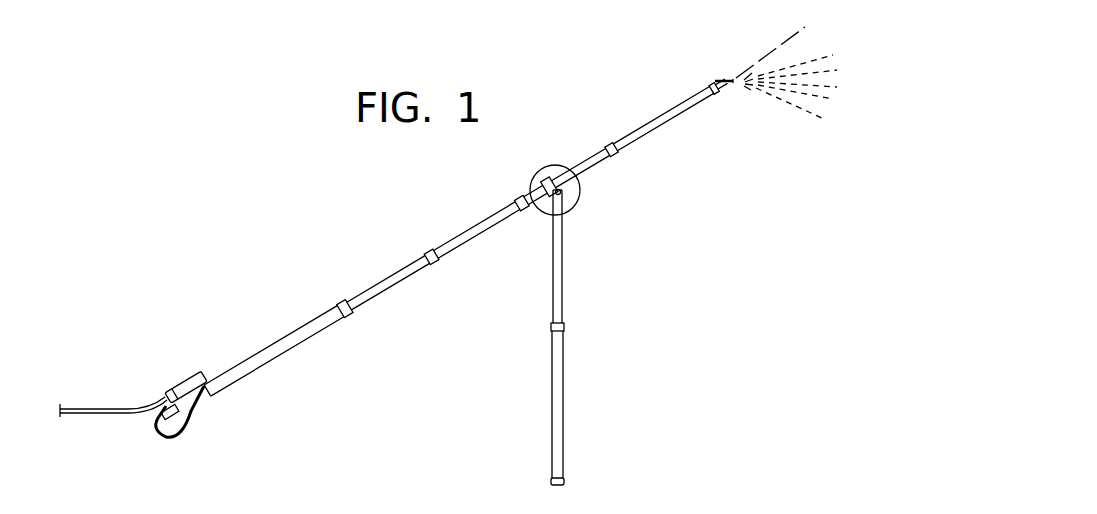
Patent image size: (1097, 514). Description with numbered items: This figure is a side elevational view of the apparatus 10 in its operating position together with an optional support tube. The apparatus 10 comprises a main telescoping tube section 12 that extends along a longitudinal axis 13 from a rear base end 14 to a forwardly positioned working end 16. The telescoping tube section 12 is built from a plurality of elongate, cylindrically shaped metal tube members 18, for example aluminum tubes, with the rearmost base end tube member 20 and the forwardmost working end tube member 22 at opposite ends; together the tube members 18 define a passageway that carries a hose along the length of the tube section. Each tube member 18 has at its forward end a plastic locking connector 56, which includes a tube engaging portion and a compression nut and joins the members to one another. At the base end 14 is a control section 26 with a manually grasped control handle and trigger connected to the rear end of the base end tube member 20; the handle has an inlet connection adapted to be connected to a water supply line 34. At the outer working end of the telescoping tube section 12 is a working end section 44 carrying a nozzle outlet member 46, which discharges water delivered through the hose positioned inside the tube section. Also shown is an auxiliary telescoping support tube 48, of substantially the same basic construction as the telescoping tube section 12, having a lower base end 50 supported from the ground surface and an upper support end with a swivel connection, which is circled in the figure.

The apparatus 10 is at (250, 304).
The main telescoping tube section 12 is at (441, 214).
The longitudinal axis 13 is at (750, 62).
The rear base end 14 is at (217, 382).
The working end 16 is at (696, 89).
The tube members 18 is at (497, 213).
The base end tube member 20 is at (248, 362).
The working end tube member 22 is at (642, 124).
The control section 26 is at (182, 383).
The water supply line 34 is at (88, 416).
The working end section 44 is at (712, 84).
The nozzle outlet member 46 is at (733, 83).
The auxiliary telescoping support tube 48 is at (601, 337).
The lower base end 50 is at (560, 472).
The locking connector 56 is at (430, 251).